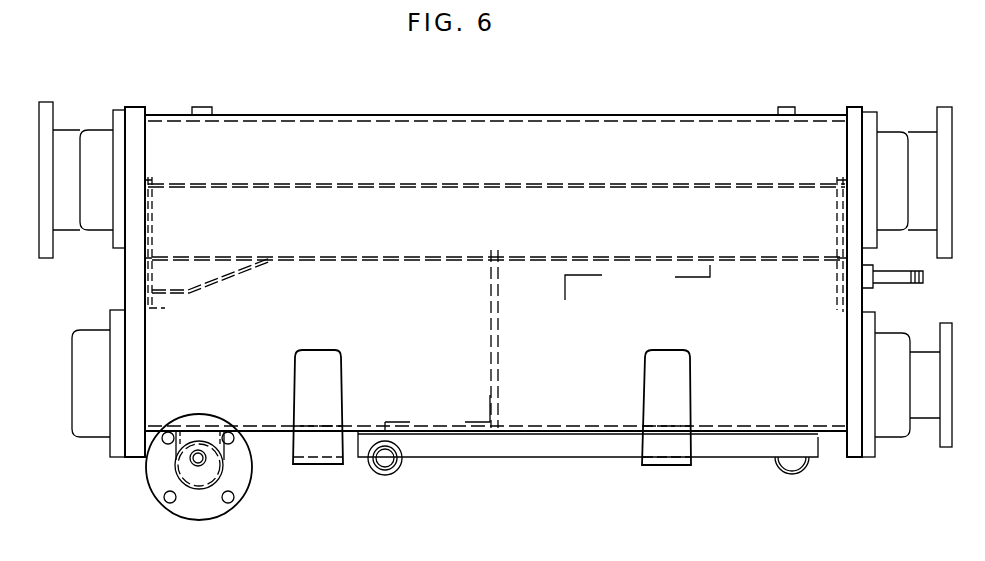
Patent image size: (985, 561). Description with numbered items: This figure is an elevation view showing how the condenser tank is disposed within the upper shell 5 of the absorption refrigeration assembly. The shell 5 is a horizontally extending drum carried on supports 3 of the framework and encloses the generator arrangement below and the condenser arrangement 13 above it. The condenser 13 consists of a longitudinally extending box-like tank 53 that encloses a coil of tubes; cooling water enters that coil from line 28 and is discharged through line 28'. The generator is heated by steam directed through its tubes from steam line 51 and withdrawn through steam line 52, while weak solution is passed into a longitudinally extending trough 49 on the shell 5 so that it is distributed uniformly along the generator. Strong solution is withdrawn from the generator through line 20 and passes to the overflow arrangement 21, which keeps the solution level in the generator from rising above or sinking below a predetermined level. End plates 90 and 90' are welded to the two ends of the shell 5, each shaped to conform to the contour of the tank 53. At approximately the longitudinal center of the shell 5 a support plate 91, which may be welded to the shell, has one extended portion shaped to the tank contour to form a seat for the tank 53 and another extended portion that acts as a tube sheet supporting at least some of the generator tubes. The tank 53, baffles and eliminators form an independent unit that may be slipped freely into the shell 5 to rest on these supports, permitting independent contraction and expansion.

The shell 5 is at (301, 115).
The condenser arrangement 13 is at (340, 203).
The condenser tank 53 is at (323, 262).
The end plate 90' is at (176, 230).
The end plate 90 is at (819, 244).
The support plate 91 is at (490, 316).
The line 28' is at (76, 173).
The line 28 is at (914, 169).
The steam line 51 is at (920, 362).
The steam line 52 is at (86, 426).
The trough 49 is at (768, 447).
The supports 3 is at (680, 386).
The overflow arrangement 21 is at (495, 107).
The line 20 is at (711, 102).